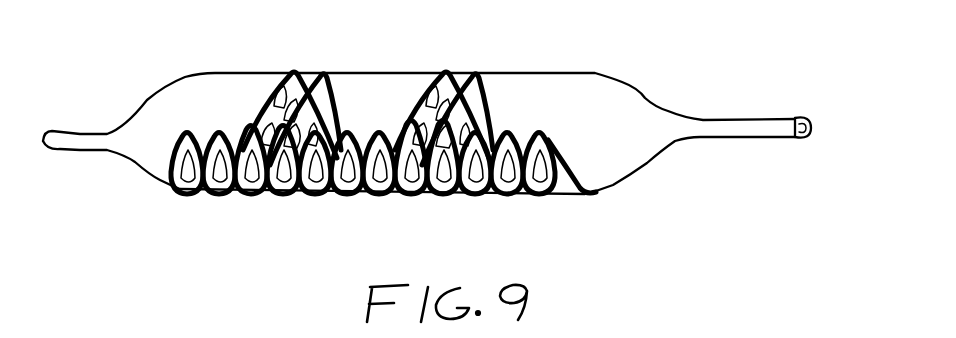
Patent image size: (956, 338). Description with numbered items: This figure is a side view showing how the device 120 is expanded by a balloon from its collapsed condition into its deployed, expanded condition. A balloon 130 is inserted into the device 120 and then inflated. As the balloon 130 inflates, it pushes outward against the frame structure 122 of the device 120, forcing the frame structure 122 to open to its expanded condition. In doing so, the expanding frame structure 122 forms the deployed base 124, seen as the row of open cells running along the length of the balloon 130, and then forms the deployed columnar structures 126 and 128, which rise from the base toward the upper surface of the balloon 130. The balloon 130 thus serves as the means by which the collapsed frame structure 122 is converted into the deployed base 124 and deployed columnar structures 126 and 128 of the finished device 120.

The device 120 is at (383, 119).
The frame structure 122 is at (203, 193).
The deployed base 124 is at (370, 190).
The deployed columnar structure 126 is at (290, 87).
The deployed columnar structure 128 is at (460, 75).
The balloon 130 is at (583, 70).